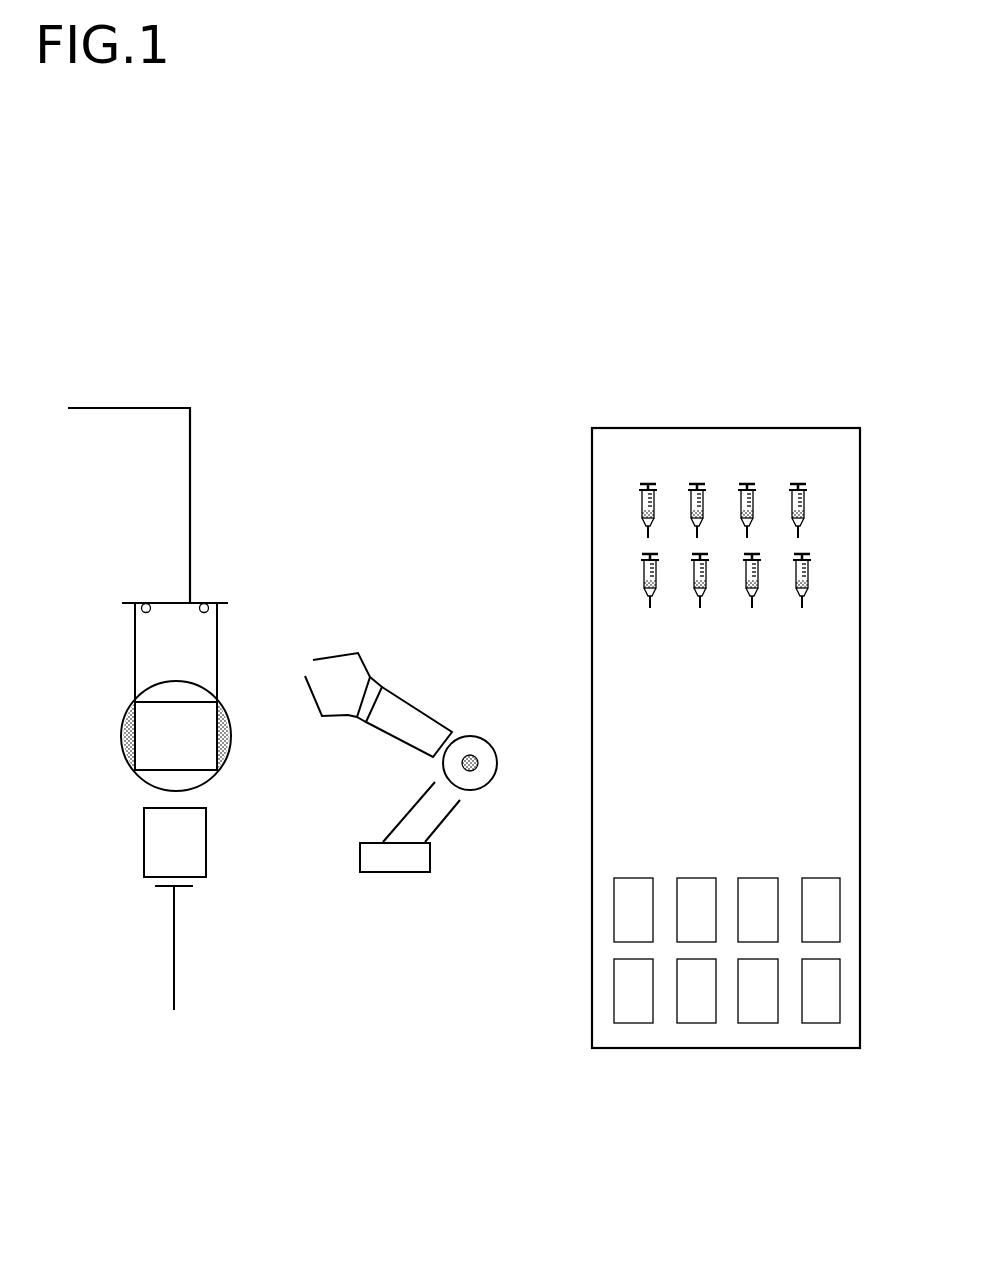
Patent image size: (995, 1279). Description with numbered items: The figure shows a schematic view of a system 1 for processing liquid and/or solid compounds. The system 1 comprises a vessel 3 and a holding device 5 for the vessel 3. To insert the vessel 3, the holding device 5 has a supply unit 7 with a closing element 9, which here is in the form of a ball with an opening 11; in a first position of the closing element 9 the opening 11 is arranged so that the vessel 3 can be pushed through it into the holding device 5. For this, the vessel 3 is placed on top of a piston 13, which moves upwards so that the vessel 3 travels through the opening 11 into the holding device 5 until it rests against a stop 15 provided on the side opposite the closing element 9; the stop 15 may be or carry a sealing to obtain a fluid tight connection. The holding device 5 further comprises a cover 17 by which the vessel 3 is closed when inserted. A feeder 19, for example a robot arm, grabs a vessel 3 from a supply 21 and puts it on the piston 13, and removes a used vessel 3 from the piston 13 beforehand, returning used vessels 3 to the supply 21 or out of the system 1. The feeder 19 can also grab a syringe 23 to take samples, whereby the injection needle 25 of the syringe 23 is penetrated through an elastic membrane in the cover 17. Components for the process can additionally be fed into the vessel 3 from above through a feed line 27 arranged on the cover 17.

The system 1 is at (440, 335).
The vessel 3 is at (155, 837).
The holding device 5 is at (100, 610).
The supply unit 7 is at (208, 780).
The closing element 9 is at (123, 747).
The opening 11 is at (190, 735).
The piston 13 is at (175, 960).
The stop 15 is at (203, 602).
The cover 17 is at (163, 602).
The feeder 19 is at (402, 722).
The supply 21 is at (604, 957).
The syringe 23 is at (648, 482).
The injection needle 25 is at (645, 531).
The feed line 27 is at (137, 407).